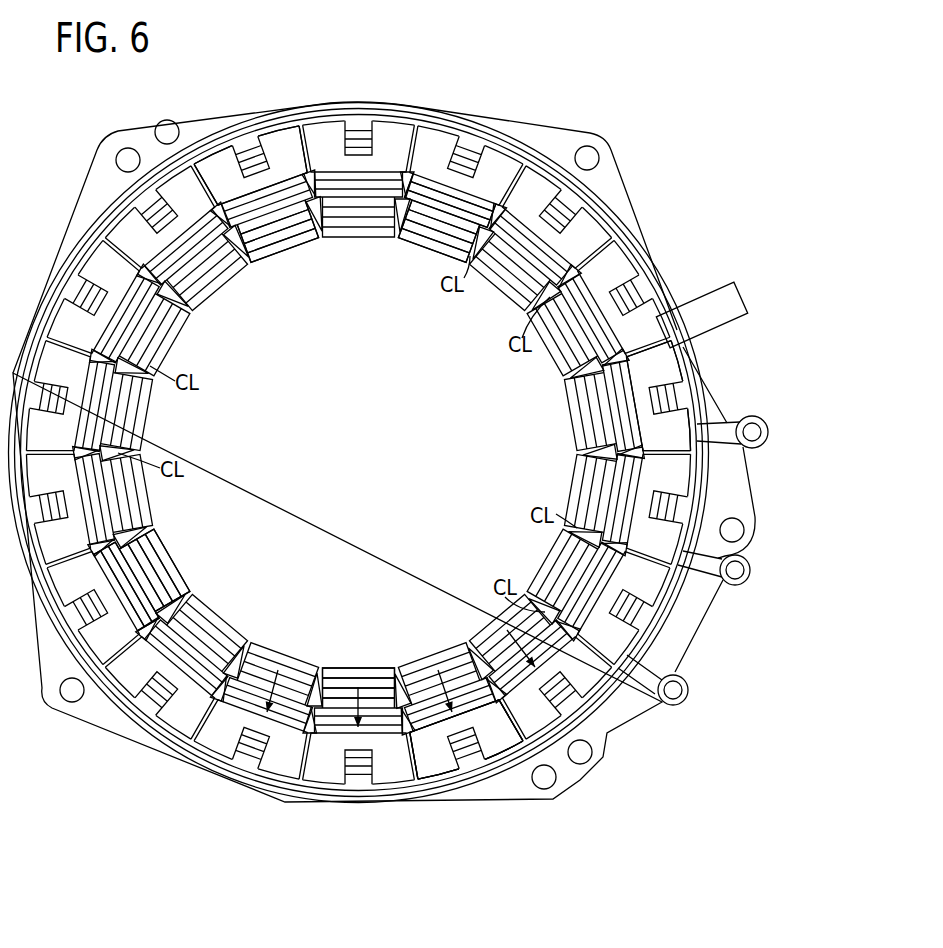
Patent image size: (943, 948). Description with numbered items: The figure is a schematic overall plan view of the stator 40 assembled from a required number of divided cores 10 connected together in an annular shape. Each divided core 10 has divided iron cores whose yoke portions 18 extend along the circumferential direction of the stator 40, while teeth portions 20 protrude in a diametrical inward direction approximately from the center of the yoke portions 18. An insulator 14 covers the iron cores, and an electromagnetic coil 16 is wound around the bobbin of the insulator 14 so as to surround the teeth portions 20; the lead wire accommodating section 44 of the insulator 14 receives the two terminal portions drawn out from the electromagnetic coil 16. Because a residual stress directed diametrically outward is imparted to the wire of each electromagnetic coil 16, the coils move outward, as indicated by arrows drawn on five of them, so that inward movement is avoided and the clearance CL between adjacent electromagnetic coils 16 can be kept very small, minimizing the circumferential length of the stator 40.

The divided core 10 is at (395, 118).
The insulator 14 is at (637, 380).
The electromagnetic coil 16 is at (455, 200).
The yoke portion 18 is at (637, 245).
The teeth portion 20 is at (270, 257).
The stator 40 is at (222, 66).
The lead wire accommodating section 44 is at (283, 148).